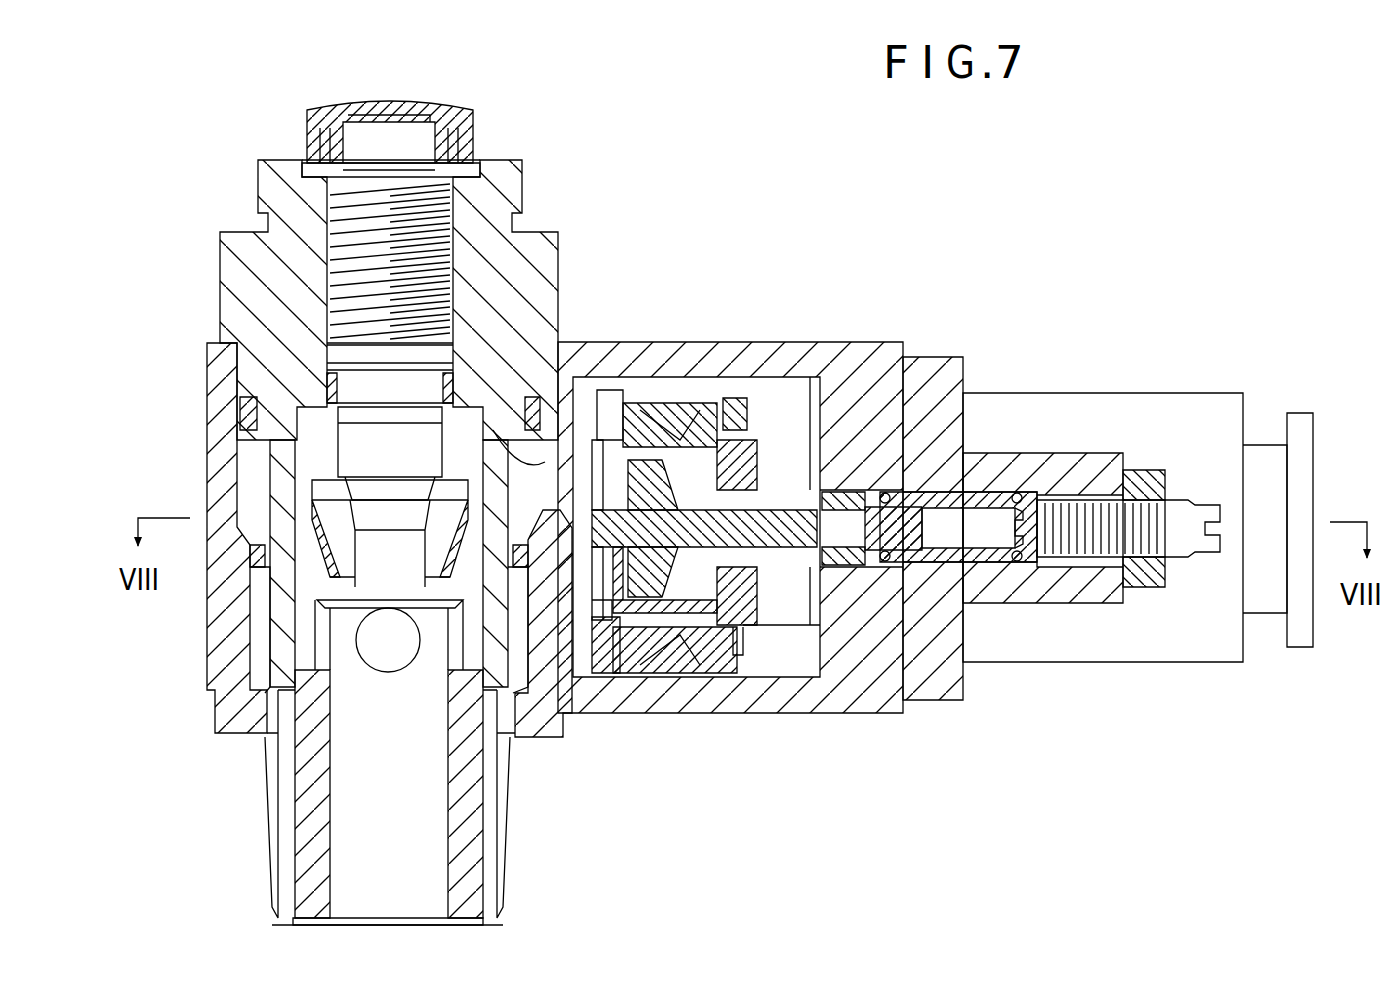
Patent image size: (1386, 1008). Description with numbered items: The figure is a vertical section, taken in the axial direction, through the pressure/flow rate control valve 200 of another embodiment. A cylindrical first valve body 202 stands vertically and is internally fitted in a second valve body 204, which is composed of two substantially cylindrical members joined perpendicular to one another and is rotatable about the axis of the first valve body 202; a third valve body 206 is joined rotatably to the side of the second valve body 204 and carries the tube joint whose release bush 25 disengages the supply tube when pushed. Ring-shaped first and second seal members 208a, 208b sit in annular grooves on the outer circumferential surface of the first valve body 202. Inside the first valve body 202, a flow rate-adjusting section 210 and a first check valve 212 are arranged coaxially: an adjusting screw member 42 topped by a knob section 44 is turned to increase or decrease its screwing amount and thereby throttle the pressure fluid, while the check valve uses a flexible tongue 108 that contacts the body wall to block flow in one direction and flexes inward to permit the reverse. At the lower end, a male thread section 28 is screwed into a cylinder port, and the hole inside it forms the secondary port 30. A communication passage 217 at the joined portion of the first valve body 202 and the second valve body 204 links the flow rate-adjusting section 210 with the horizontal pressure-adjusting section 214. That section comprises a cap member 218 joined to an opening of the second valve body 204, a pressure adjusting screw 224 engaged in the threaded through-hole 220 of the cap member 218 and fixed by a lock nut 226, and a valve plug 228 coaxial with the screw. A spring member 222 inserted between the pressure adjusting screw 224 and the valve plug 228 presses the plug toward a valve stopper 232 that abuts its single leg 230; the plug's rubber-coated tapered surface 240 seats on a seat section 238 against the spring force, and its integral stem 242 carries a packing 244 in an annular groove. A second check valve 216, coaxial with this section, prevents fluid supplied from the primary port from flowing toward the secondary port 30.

The pressure/flow rate control valve 200 is at (785, 146).
The knob section 44 is at (383, 100).
The adjusting screw member 42 is at (345, 272).
The first valve body 202 is at (265, 305).
The flow rate-adjusting section 210 is at (448, 410).
The communication passage 217 is at (448, 442).
The seat section 238 is at (740, 432).
The pressure-adjusting section 214 is at (835, 385).
The packing 244 is at (930, 470).
The third valve body 206 is at (1078, 420).
The release bush 25 is at (1298, 425).
The lock nut 226 is at (1148, 480).
The first seal member 208a is at (243, 410).
The first check valve 212 is at (312, 538).
The second seal member 208b is at (256, 556).
The tongue 108 is at (262, 668).
The secondary port 30 is at (377, 818).
The male thread section 28 is at (500, 845).
The valve stopper 232 is at (592, 648).
The single leg 230 is at (604, 640).
The second check valve 216 is at (672, 590).
The tapered surface 240 is at (722, 600).
The valve plug 228 is at (778, 500).
The spring member 222 is at (870, 565).
The cap member 218 is at (940, 690).
The second valve body 204 is at (685, 703).
The stem 242 is at (907, 533).
The through-hole 220 is at (978, 585).
The pressure adjusting screw 224 is at (1110, 545).